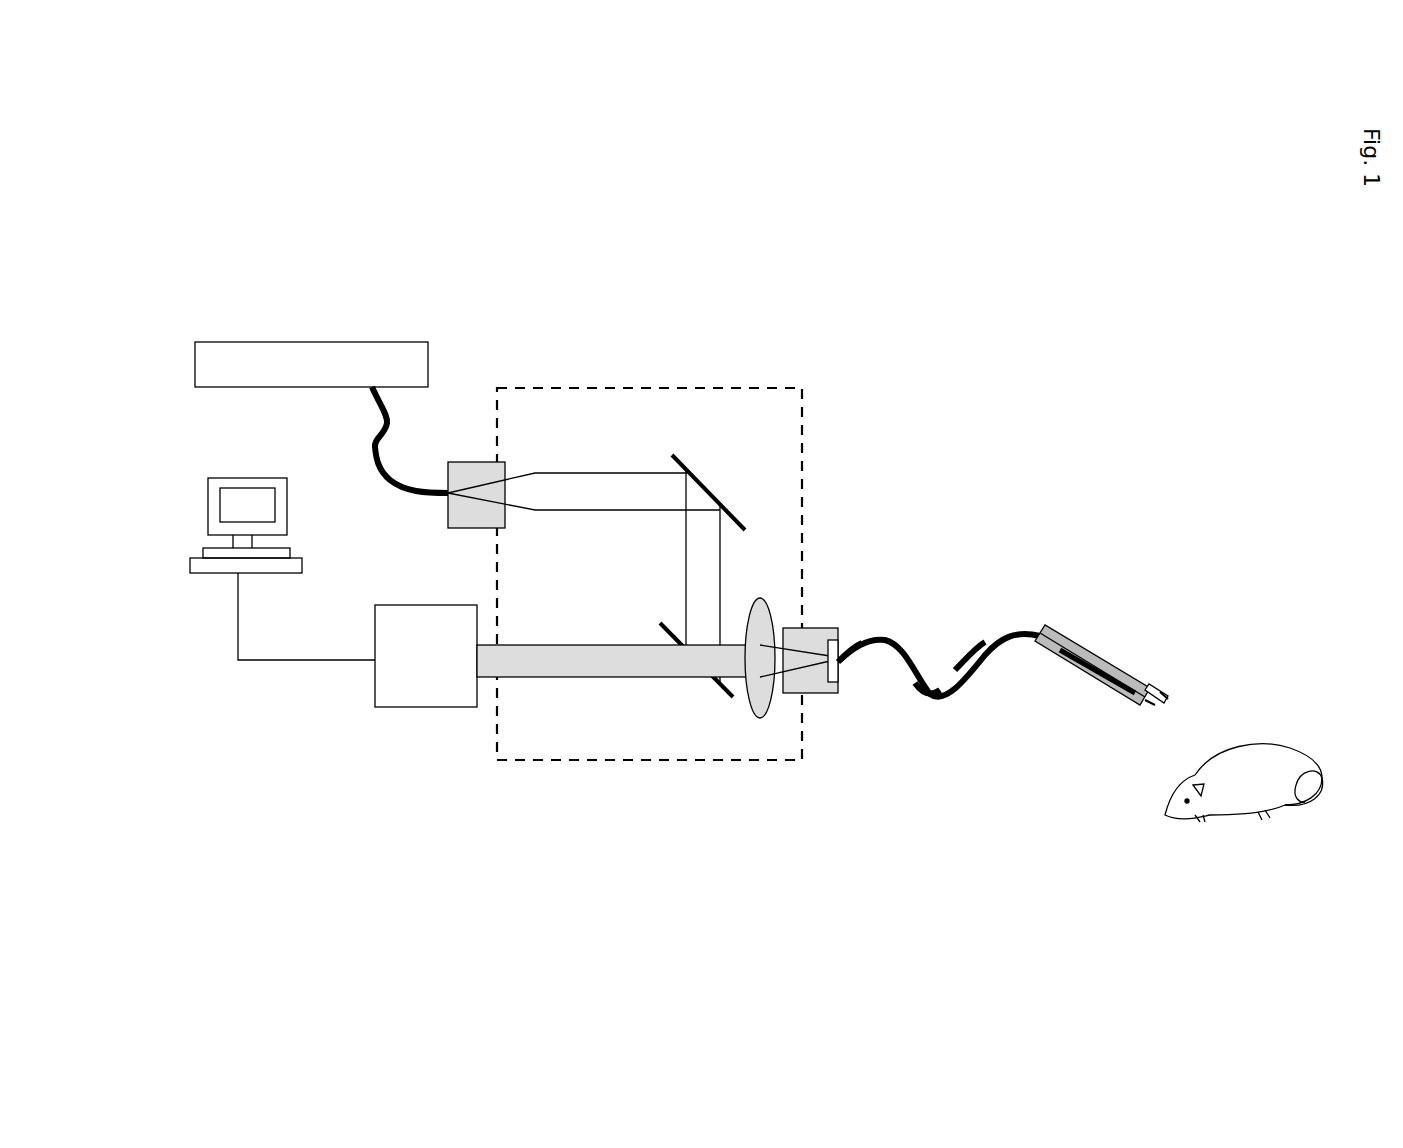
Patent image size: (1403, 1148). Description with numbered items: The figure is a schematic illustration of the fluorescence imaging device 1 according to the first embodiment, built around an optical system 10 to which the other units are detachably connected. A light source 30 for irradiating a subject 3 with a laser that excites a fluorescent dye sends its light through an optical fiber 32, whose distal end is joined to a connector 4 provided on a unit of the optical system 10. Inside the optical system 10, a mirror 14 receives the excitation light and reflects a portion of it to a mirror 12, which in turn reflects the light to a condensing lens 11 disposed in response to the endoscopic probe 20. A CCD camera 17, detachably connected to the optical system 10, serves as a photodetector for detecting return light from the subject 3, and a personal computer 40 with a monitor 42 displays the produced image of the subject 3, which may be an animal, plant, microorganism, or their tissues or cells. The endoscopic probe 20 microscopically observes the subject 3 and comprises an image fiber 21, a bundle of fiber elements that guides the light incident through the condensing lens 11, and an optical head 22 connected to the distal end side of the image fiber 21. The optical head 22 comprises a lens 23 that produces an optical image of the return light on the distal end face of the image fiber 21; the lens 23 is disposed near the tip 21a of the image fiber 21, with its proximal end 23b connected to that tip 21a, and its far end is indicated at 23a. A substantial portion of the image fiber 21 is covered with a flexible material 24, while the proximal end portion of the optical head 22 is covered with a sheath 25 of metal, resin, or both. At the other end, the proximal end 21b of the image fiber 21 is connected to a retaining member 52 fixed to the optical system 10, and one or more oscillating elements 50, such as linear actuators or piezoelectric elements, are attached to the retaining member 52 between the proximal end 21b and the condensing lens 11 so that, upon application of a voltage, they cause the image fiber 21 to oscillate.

The fluorescence imaging device 1 is at (1018, 352).
The subject 3 is at (1285, 762).
The connector 4 is at (460, 528).
The optical system 10 is at (803, 425).
The condensing lens 11 is at (762, 718).
The mirror 12 is at (723, 692).
The mirror 14 is at (740, 517).
The CCD camera 17 is at (413, 707).
The endoscopic probe 20 is at (992, 630).
The image fiber 21 is at (920, 693).
The tip of the image fiber 21a is at (1153, 688).
The proximal end of the image fiber 21b is at (845, 680).
The optical head 22 is at (1068, 645).
The lens 23 is at (1201, 677).
The tip end face 23a is at (1160, 699).
The proximal end of the lens 23b is at (1148, 707).
The flexible material 24 is at (963, 680).
The sheath 25 is at (1095, 685).
The light source 30 is at (301, 342).
The optical fiber 32 is at (381, 475).
The personal computer 40 is at (300, 558).
The monitor 42 is at (242, 478).
The oscillating element 50 is at (843, 627).
The retaining member 52 is at (833, 636).